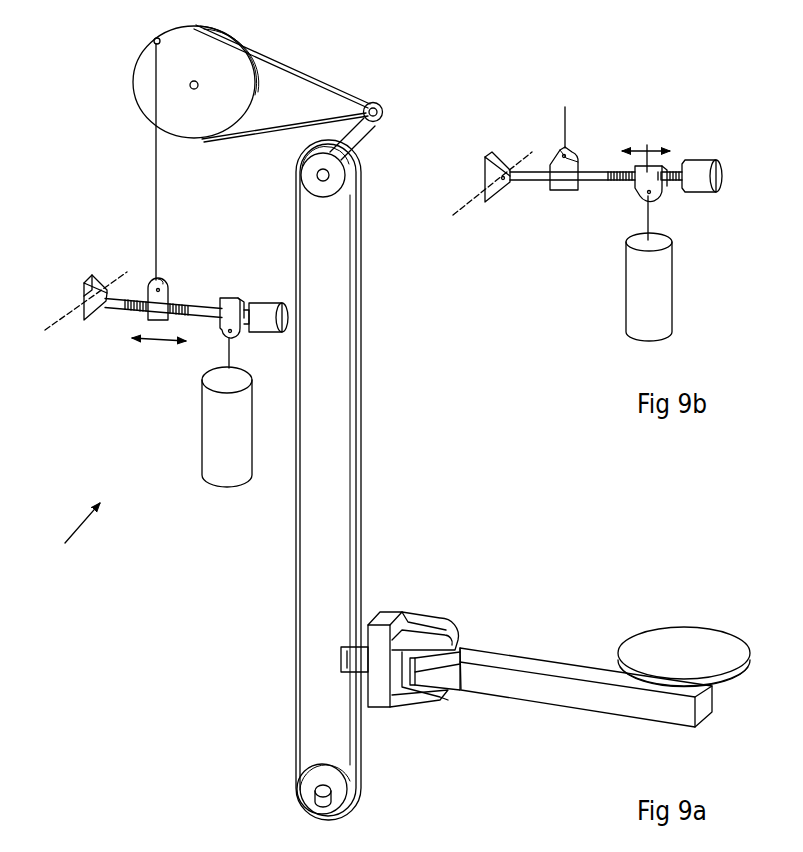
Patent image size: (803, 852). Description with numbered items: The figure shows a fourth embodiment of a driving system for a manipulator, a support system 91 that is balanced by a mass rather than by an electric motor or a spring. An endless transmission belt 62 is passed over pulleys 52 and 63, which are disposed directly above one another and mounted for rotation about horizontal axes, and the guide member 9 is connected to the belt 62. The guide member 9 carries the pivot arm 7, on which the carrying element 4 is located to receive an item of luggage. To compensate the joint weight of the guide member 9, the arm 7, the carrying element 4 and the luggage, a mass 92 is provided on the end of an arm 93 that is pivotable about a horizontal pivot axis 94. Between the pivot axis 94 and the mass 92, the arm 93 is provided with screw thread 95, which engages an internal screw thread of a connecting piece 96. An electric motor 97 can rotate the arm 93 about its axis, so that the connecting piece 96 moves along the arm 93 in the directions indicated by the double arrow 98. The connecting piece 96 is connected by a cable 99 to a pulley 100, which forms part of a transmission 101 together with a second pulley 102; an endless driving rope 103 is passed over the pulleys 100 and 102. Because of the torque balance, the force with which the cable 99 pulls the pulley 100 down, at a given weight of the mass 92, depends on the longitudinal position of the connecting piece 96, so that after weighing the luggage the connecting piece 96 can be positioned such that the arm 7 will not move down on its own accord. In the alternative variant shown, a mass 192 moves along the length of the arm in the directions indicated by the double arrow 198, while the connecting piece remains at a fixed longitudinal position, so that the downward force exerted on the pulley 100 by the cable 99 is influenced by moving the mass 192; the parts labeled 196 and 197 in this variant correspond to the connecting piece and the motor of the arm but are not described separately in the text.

In FIG. 9A, the carrying element 4 is at (683, 638).
In FIG. 9A, the arm 7 is at (533, 660).
In FIG. 9A, the guide member 9 is at (398, 614).
In FIG. 9A, the pulley 52 is at (340, 800).
In FIG. 9A, the transmission belt 62 is at (362, 345).
In FIG. 9A, the pulley 63 is at (338, 183).
In FIG. 9A, the support system 91 is at (70, 536).
In FIG. 9A, the mass 92 is at (220, 475).
In FIG. 9A, the arm 93 is at (203, 311).
In FIG. 9A, the pivot axis 94 is at (60, 323).
In FIG. 9B, the pivot axis 94 is at (468, 206).
In FIG. 9A, the screw thread 95 is at (141, 297).
In FIG. 9A, the connecting piece 96 is at (170, 290).
In FIG. 9A, the electric motor 97 is at (266, 312).
In FIG. 9A, the double arrow 98 is at (160, 348).
In FIG. 9A, the cable 99 is at (159, 190).
In FIG. 9B, the cable 99 is at (566, 123).
In FIG. 9A, the pulley 100 is at (218, 55).
In FIG. 9A, the transmission 101 is at (296, 114).
In FIG. 9A, the second pulley 102 is at (384, 114).
In FIG. 9A, the endless driving rope 103 is at (313, 76).
In FIG. 9B, the mass 192 is at (633, 315).
In FIG. 9B, the slider 196 is at (563, 190).
In FIG. 9B, the adjustment knob 197 is at (697, 172).
In FIG. 9B, the double arrow 198 is at (639, 147).